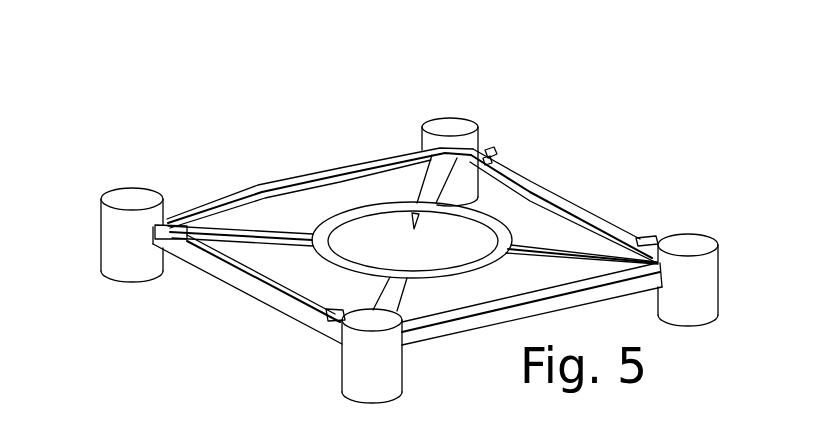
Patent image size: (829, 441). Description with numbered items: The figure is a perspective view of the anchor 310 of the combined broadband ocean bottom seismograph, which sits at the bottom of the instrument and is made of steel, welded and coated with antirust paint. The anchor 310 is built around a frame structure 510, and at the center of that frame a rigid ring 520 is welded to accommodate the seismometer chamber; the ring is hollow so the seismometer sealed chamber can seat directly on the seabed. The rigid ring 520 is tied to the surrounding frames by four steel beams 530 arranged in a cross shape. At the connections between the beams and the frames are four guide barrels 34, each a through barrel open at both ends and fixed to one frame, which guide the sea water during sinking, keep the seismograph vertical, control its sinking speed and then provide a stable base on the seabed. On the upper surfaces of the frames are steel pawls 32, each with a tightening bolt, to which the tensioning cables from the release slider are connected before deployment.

The steel pawl 32 is at (506, 133).
The guide barrel 34 is at (726, 225).
The anchor 310 is at (568, 144).
The frame structure 510 is at (249, 174).
The rigid ring 520 is at (332, 196).
The steel beam 530 is at (244, 256).